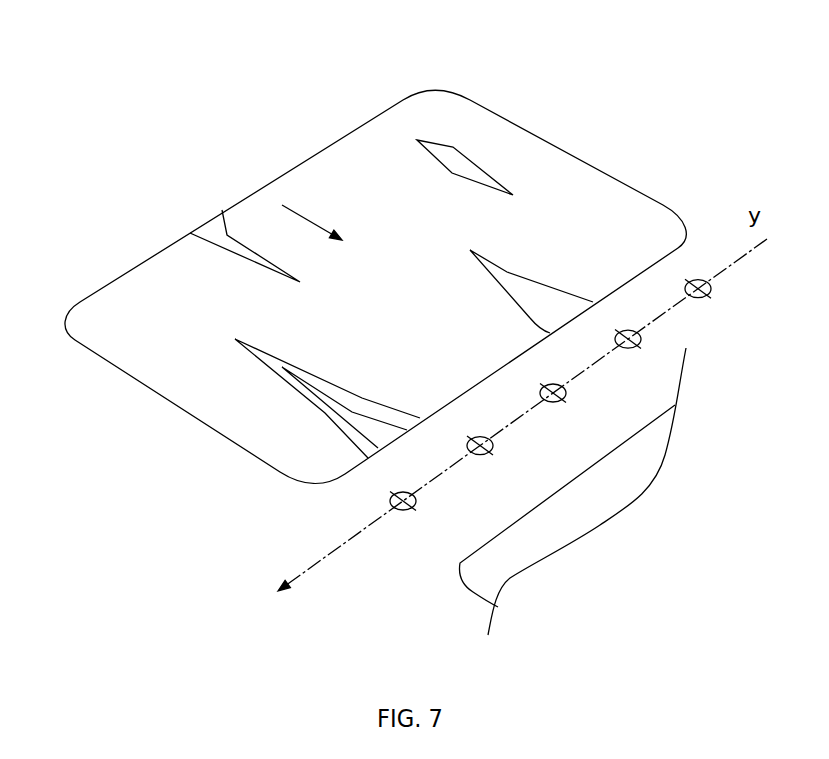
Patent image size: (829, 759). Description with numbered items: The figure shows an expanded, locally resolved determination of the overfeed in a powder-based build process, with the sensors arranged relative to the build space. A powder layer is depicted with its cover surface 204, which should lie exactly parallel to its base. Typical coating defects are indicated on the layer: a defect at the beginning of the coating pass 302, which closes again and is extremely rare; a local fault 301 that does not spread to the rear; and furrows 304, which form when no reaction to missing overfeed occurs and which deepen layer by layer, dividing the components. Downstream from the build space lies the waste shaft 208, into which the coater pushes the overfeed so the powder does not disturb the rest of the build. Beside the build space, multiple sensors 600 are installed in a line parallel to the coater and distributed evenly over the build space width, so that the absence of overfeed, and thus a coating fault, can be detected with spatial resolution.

The local fault 301 is at (444, 147).
The coating pass beginning defect 302 is at (202, 231).
The cover surface 204 is at (555, 291).
The furrow 304 is at (341, 415).
The sensor 600 is at (577, 396).
The waste shaft 208 is at (566, 533).